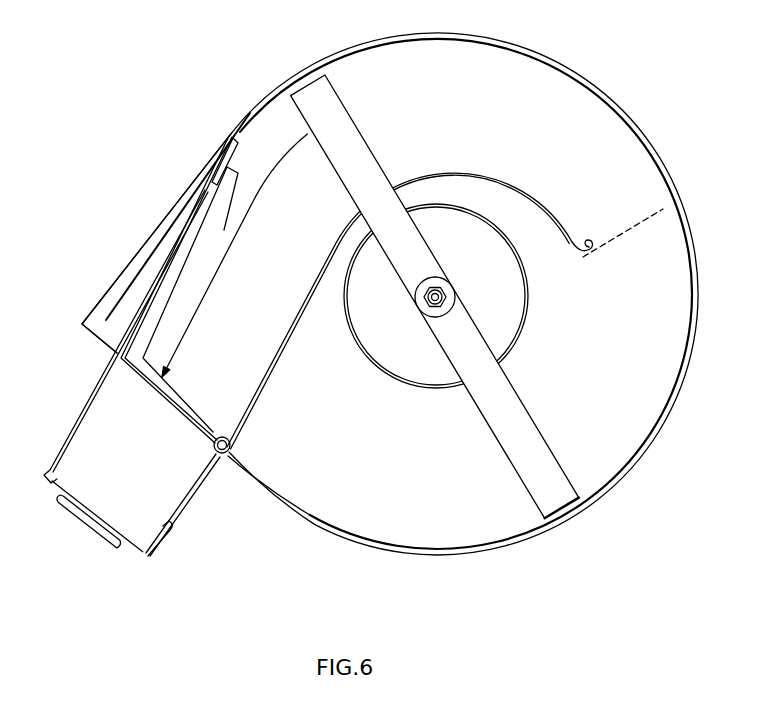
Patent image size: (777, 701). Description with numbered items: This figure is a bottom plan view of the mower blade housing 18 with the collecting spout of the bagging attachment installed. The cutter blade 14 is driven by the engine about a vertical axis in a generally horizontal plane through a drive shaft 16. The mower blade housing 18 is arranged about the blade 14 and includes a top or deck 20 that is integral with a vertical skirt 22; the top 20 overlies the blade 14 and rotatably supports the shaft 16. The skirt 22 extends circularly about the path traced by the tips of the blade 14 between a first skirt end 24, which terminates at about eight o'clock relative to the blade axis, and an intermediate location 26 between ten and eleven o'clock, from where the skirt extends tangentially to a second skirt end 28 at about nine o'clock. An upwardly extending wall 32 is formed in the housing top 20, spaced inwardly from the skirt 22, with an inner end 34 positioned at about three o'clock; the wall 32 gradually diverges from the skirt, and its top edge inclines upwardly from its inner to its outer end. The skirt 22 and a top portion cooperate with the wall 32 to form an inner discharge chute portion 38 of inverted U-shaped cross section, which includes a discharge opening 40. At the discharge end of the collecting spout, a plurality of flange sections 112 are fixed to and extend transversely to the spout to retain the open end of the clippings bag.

The cutter blade 14 is at (384, 160).
The drive shaft 16 is at (446, 294).
The mower blade housing 18 is at (238, 115).
The top or deck 20 is at (422, 478).
The vertical skirt 22 is at (664, 428).
The first skirt end 24 is at (236, 440).
The intermediate location 26 is at (228, 134).
The second skirt end 28 is at (98, 342).
The upwardly extending wall 32 is at (311, 293).
The inner end 34 is at (591, 242).
The inner discharge chute portion 38 is at (631, 229).
The discharge opening 40 is at (178, 398).
The flange sections 112 is at (155, 548).